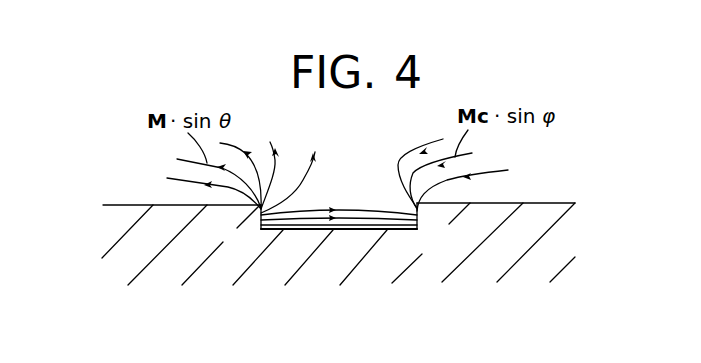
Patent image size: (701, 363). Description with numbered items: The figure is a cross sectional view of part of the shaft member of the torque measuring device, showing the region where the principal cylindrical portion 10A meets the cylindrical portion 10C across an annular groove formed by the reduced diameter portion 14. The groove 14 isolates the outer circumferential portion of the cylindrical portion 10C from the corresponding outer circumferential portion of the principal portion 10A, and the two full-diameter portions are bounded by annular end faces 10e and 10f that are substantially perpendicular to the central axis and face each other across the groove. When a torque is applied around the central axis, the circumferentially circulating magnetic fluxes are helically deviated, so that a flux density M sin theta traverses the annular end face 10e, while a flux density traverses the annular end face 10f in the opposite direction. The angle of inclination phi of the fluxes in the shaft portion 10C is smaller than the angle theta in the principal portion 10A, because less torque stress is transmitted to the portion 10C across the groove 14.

The principal cylindrical portion 10A is at (137, 205).
The cylindrical portion 10C is at (545, 203).
The reduced diameter portion 14 is at (342, 229).
The annular end face 10e is at (272, 229).
The annular end face 10f is at (404, 229).